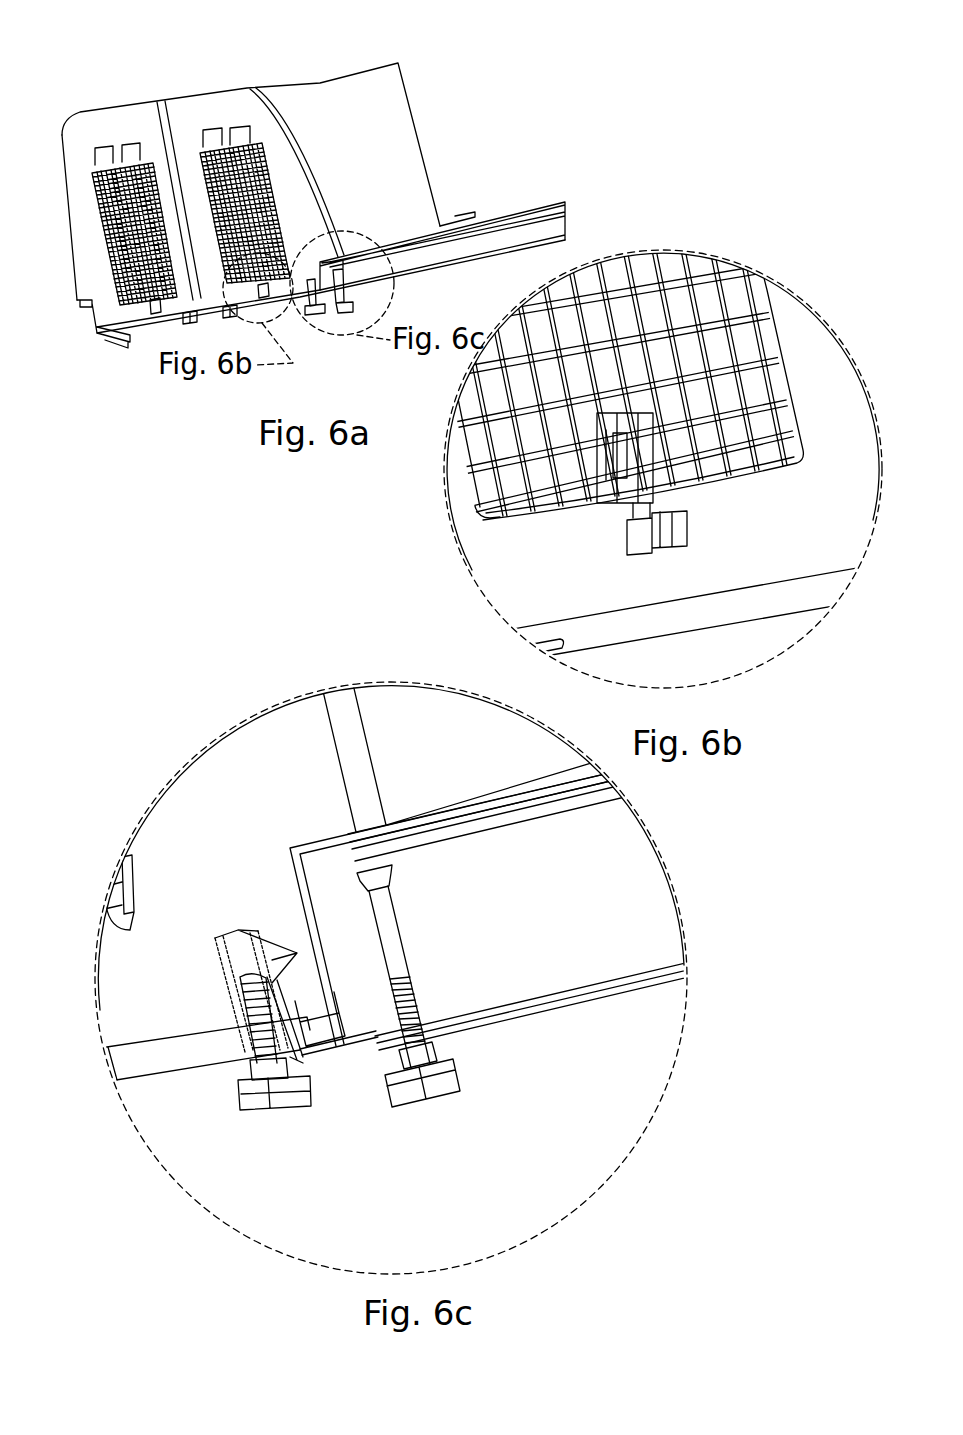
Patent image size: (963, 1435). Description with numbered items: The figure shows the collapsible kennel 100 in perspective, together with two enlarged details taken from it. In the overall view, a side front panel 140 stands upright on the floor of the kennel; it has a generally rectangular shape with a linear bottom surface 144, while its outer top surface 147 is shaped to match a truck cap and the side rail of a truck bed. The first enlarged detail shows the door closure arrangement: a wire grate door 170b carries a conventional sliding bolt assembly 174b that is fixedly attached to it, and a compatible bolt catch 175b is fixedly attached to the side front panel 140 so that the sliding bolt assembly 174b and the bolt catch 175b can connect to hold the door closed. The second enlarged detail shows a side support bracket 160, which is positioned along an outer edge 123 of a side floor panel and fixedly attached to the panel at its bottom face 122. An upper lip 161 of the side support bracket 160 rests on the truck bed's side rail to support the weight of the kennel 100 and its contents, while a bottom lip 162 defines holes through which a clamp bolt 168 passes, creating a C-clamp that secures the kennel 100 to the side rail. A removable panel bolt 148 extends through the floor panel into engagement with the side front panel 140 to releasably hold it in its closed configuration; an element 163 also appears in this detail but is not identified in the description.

In FIG. 6A, the collapsible kennel 100 is at (140, 76).
In FIG. 6B, the wire grate door 170b is at (700, 305).
In FIG. 6B, the sliding bolt assembly 174b is at (650, 452).
In FIG. 6B, the bolt catch 175b is at (658, 537).
In FIG. 6B, the linear bottom surface 144 is at (577, 617).
In FIG. 6C, the linear bottom surface 144 is at (205, 1060).
In FIG. 6B, the side front panel 140 is at (630, 621).
In FIG. 6C, the side front panel 140 is at (457, 909).
In FIG. 6C, the outer top surface 147 is at (347, 705).
In FIG. 6C, the upper lip 161 is at (613, 793).
In FIG. 6C, the bottom lip 162 is at (670, 970).
In FIG. 6C, the bolt 163 is at (325, 953).
In FIG. 6C, the clamp bolt 168 is at (427, 1100).
In FIG. 6C, the side support bracket 160 is at (552, 952).
In FIG. 6C, the outer edge 123 is at (310, 1030).
In FIG. 6C, the bottom face 122 is at (152, 1070).
In FIG. 6C, the panel bolt 148 is at (272, 1110).